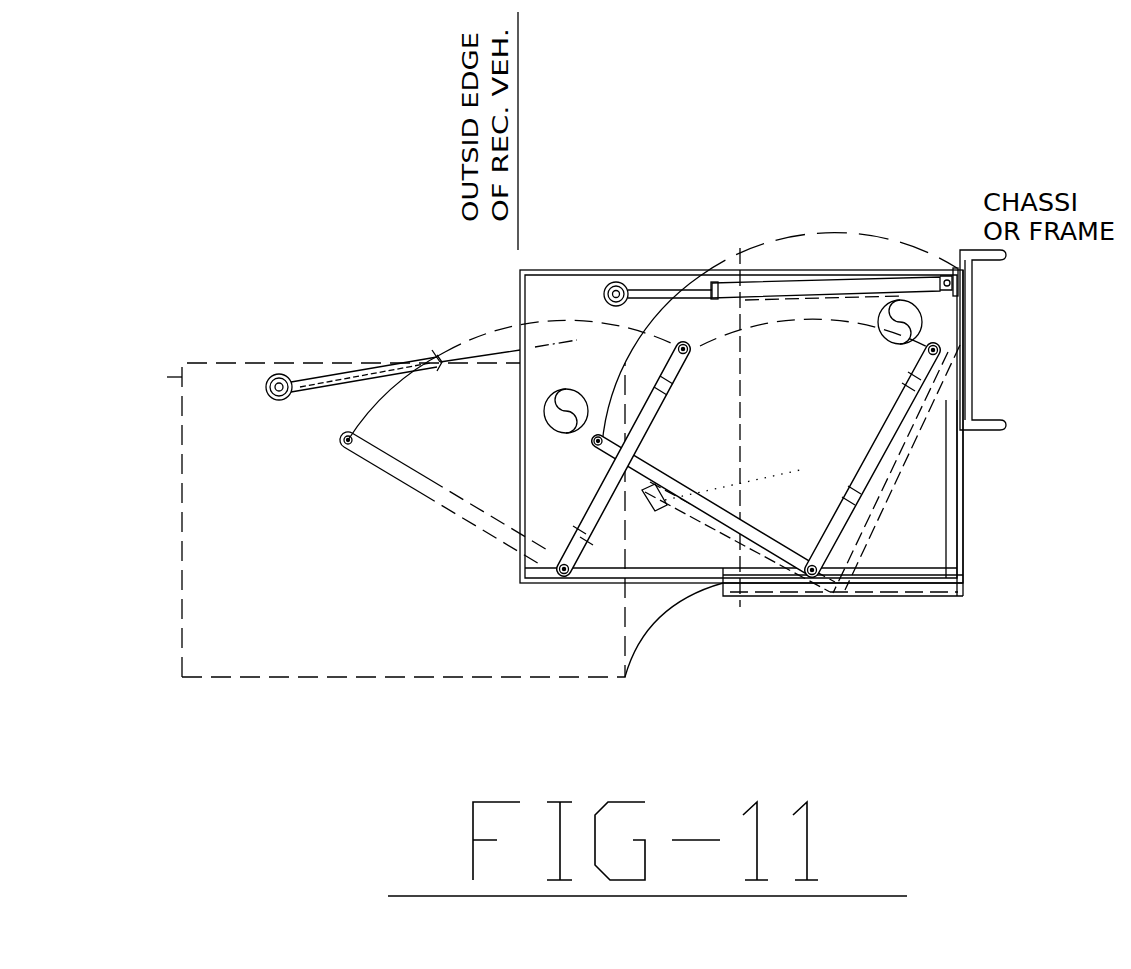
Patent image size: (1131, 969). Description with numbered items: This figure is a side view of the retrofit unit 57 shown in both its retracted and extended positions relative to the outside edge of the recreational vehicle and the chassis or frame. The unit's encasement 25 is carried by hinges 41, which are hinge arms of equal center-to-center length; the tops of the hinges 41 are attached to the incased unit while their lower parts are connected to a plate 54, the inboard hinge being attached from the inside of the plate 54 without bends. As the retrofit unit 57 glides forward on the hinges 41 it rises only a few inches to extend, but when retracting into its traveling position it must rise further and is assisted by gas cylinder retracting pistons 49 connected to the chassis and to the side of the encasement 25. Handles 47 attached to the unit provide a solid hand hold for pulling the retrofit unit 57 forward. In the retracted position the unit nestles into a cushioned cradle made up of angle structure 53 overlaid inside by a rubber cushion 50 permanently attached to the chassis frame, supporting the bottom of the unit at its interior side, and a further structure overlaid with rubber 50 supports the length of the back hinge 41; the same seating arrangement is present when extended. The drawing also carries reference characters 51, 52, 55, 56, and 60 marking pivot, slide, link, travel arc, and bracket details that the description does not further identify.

The encasement 25 is at (618, 270).
The hinge 41 is at (655, 424).
The handle 47 is at (520, 286).
The gas cylinder retracting piston 49 is at (828, 279).
The rubber cushion 50 is at (965, 393).
The pivot 51 is at (882, 340).
The slide member 52 is at (885, 497).
The angle structure 53 is at (965, 505).
The plate 54 is at (788, 476).
The link bar 55 is at (695, 530).
The arc of travel 56 is at (793, 241).
The retrofit unit 57 is at (353, 363).
The bracket 60 is at (685, 505).